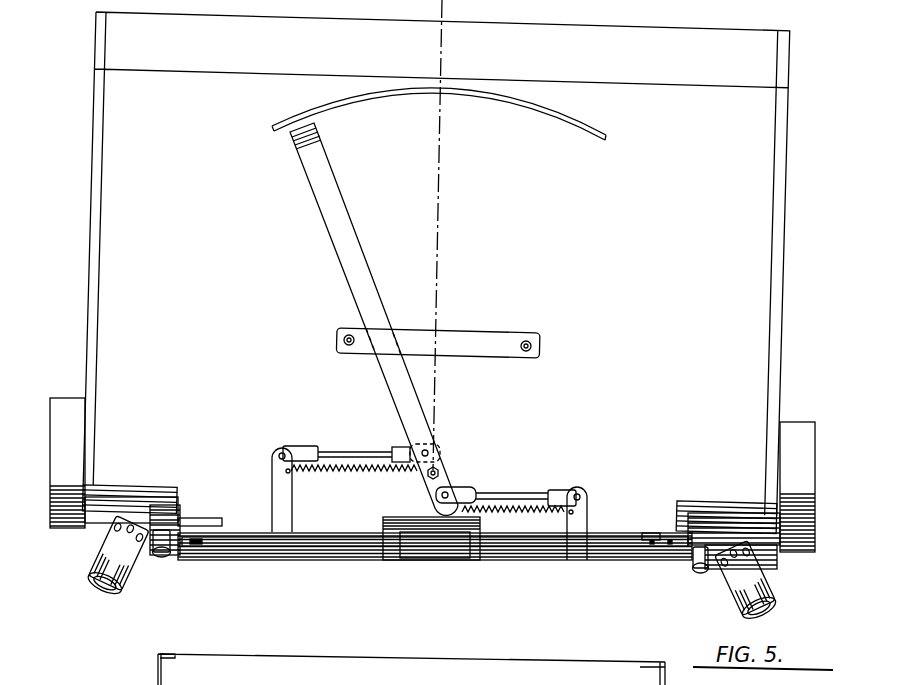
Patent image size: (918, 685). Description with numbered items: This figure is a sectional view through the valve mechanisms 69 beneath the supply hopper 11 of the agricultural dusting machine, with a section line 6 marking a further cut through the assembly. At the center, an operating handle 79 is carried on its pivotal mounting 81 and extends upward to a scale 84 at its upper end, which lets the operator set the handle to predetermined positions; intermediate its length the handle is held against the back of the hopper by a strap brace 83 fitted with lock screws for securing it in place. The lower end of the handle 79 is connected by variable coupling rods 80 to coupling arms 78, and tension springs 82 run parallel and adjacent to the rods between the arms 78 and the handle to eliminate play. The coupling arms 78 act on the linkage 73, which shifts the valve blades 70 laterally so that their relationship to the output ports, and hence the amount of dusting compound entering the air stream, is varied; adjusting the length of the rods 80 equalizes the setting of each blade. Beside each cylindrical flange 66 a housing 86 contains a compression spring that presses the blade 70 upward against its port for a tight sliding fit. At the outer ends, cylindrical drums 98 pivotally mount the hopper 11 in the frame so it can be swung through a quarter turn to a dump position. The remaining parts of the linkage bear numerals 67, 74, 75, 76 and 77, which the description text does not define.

The section line 6- 6 is at (418, 6).
The supply hopper 11 is at (788, 210).
The cylindrical flange 66 is at (95, 580).
The handle holes 67 is at (100, 542).
The valve mechanism 69 is at (202, 500).
The valve blade 70 is at (182, 512).
The linkage 73 is at (340, 549).
The rod 74 is at (200, 541).
The plate 75 is at (215, 521).
The center block 76 is at (396, 559).
The slide block 77 is at (437, 558).
The coupling arm 78 is at (272, 490).
The operating handle 79 is at (353, 257).
The variable coupling rod 80 is at (365, 450).
The pivotal mounting 81 is at (440, 472).
The tension spring 82 is at (367, 479).
The strap brace 83 is at (465, 343).
The scale 84 is at (320, 108).
The housing 86 is at (160, 556).
The cylindrical drum 98 is at (55, 410).